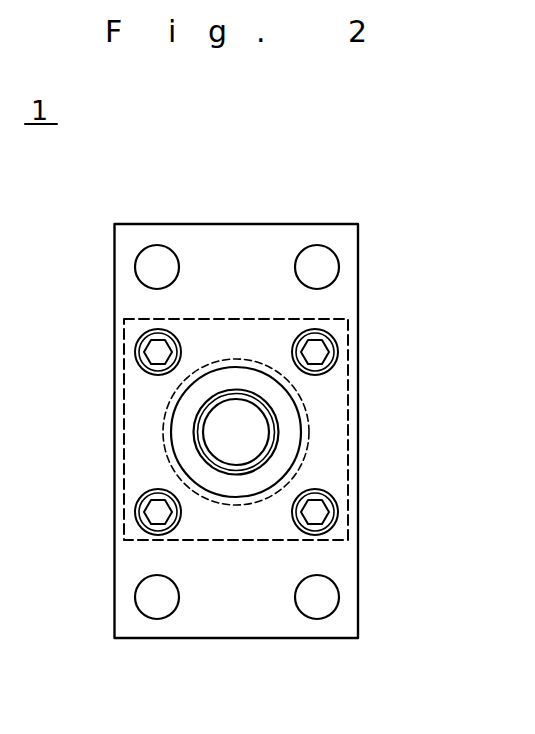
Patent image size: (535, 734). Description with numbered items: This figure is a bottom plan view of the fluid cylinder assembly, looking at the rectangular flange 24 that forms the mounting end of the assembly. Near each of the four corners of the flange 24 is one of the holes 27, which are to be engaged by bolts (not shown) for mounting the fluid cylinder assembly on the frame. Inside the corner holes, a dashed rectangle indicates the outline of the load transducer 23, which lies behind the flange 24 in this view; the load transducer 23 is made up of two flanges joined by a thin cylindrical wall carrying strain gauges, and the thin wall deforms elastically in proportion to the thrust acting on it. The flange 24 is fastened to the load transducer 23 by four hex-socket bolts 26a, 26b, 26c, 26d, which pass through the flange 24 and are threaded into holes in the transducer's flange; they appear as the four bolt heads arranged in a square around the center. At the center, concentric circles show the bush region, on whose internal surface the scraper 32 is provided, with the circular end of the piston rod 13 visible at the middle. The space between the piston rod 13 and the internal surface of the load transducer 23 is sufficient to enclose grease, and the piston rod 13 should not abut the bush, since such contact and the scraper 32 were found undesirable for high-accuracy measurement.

The flange 24 is at (240, 229).
The holes 27 is at (332, 260).
The load transducer 23 is at (332, 418).
The scraper 32 is at (183, 413).
The piston rod 13 is at (257, 443).
The bolt 26a is at (327, 345).
The bolt 26b is at (148, 352).
The bolt 26c is at (145, 512).
The bolt 26d is at (327, 507).